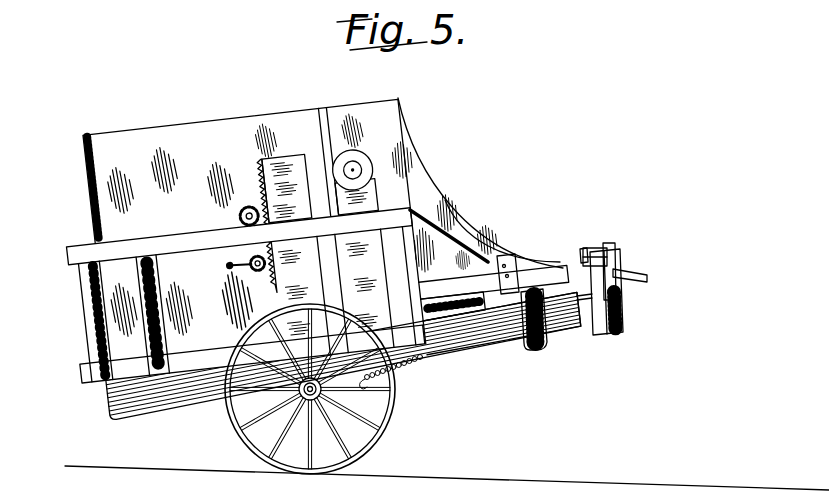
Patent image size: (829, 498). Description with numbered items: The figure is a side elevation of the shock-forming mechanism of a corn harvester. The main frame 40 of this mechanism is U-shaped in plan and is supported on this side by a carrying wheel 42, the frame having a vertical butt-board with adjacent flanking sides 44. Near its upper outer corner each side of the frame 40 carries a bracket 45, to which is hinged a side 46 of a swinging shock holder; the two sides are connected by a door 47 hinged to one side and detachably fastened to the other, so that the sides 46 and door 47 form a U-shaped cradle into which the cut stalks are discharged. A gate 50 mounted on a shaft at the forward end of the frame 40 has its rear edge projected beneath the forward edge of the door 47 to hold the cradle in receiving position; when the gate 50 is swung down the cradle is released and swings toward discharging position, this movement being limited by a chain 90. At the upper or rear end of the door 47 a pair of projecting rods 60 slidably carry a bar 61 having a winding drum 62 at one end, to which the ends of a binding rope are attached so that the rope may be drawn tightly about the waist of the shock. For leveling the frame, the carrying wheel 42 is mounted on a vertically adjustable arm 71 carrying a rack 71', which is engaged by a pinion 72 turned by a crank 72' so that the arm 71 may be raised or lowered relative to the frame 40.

The main frame 40 is at (83, 248).
The carrying wheel 42 is at (377, 392).
The flanking side 44 is at (178, 140).
The bracket 45 is at (377, 197).
The side of swinging shock holder 46 is at (330, 172).
The door 47 is at (492, 333).
The gate 50 is at (155, 390).
The projecting rod 60 is at (643, 280).
The bar 61 is at (620, 318).
The winding drum 62 is at (593, 248).
The vertically adjustable arm 71 is at (292, 144).
The rack 71' is at (260, 179).
The pinion 72 is at (234, 268).
The crank 72' is at (208, 274).
The chain 90 is at (413, 366).